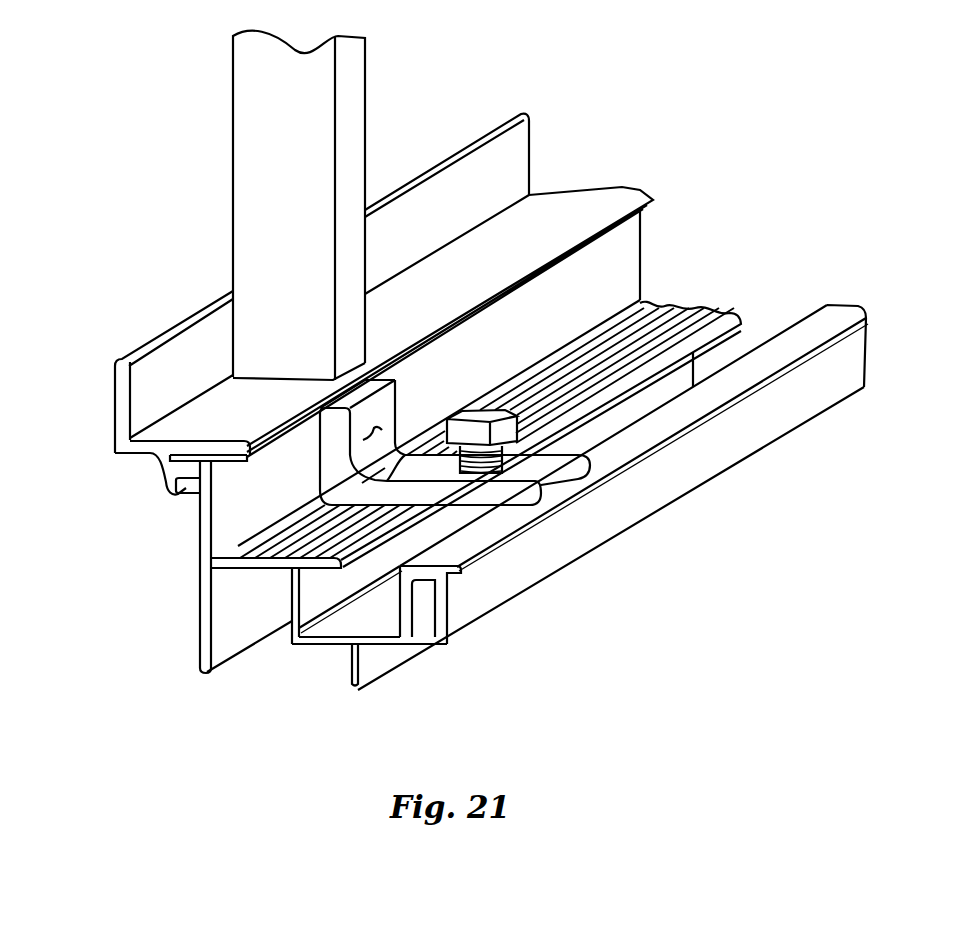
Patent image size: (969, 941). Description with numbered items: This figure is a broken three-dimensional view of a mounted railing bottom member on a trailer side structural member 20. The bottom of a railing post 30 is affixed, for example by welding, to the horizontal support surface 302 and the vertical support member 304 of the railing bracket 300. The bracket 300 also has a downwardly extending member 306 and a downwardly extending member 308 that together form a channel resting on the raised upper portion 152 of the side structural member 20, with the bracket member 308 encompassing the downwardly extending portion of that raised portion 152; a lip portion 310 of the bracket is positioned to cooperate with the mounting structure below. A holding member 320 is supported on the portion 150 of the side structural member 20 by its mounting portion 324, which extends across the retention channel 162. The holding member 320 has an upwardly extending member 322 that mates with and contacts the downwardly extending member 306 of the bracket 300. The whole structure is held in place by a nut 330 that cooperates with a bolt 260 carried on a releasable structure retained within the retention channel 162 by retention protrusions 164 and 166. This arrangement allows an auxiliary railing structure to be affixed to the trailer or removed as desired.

The side structural member 20 is at (463, 529).
The railing post 30 is at (233, 173).
The portion of side structural member 150 is at (275, 565).
The upper portion of side structural member 152 is at (197, 508).
The retention channel 162 is at (370, 585).
The retention protrusion 164 is at (318, 570).
The retention protrusion 166 is at (412, 580).
The bolt 260 is at (517, 427).
The railing bracket 300 is at (395, 356).
The horizontal support surface 302 is at (230, 410).
The vertical support member 304 is at (123, 357).
The downwardly extending member 306 is at (237, 557).
The downwardly extending member 308 is at (196, 487).
The lip portion 310 is at (641, 193).
The holding member 320 is at (442, 458).
The upwardly extending member 322 is at (250, 484).
The mounting portion 324 is at (463, 515).
The nut 330 is at (520, 422).